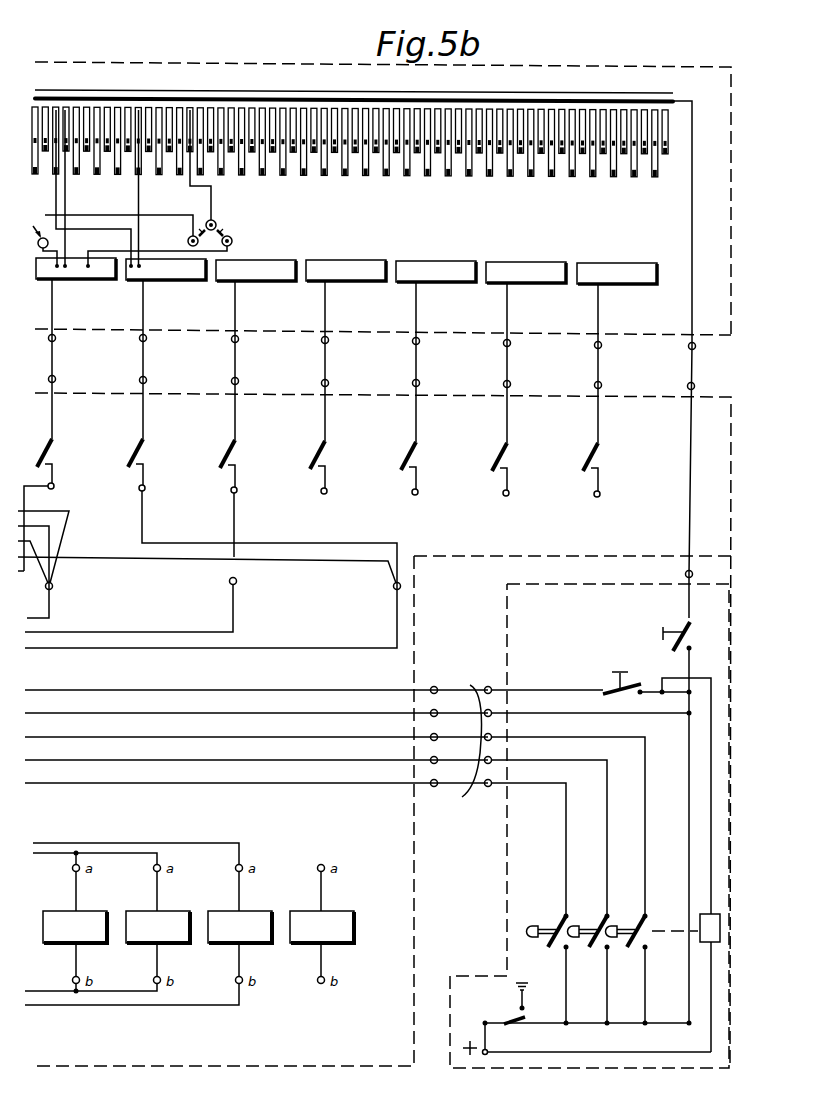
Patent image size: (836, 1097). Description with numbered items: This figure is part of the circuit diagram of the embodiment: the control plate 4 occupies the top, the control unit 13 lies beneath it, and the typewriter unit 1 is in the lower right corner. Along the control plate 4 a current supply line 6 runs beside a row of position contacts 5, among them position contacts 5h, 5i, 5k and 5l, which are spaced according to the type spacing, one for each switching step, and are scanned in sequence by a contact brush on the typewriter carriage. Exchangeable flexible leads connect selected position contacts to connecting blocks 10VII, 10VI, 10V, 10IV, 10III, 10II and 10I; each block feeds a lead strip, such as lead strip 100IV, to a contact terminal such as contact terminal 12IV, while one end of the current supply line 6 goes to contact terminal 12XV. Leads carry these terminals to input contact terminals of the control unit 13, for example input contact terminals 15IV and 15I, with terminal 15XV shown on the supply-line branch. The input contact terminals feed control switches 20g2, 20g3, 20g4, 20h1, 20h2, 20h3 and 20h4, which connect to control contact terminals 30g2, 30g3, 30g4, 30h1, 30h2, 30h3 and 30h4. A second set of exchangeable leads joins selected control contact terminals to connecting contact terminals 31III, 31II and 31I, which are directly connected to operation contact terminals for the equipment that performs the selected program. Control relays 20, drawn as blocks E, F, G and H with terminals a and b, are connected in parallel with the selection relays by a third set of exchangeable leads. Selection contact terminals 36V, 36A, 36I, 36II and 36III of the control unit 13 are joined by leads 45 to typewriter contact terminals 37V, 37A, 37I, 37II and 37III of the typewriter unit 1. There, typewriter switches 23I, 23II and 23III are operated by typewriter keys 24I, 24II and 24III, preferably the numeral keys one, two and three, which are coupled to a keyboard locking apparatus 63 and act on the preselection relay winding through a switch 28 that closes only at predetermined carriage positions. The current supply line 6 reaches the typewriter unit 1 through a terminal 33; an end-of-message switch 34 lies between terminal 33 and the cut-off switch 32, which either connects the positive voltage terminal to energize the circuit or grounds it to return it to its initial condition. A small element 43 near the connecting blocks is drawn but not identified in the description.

The typewriter unit 1 is at (730, 755).
The control plate 4 is at (735, 241).
The position contacts 5 is at (670, 125).
The position contact 5h is at (60, 107).
The position contact 5i is at (67, 110).
The position contact 5k is at (139, 107).
The contact pin 5l is at (190, 107).
The current supply line 6 is at (668, 100).
The connecting block 10VII is at (78, 272).
The connecting block 10VI is at (177, 273).
The connecting block 10V is at (267, 274).
The connecting block 10IV is at (353, 274).
The connecting block 10III is at (448, 275).
The connecting block 10II is at (538, 276).
The connecting block 10I is at (633, 277).
The lead strip 100IV is at (325, 322).
The contact terminal 12IV is at (321, 342).
The input contact terminal 15IV is at (321, 383).
The input contact terminal 15I is at (601, 386).
The contact terminal 12XV is at (696, 347).
The terminal 15XV is at (695, 388).
The control unit 13 is at (737, 500).
The control relay 20 is at (98, 914).
The control switch 20g2 is at (68, 452).
The control switch 20g3 is at (159, 452).
The control switch 20g4 is at (251, 453).
The control switch 20h1 is at (341, 454).
The control switch 20h2 is at (432, 455).
The control switch 20h3 is at (523, 456).
The control switch 20h4 is at (614, 456).
The control contact terminal 30g2 is at (55, 487).
The control contact terminal 30g3 is at (146, 489).
The control contact terminal 30g4 is at (238, 491).
The control contact terminal 30h1 is at (328, 492).
The control contact terminal 30h2 is at (419, 493).
The control contact terminal 30h3 is at (510, 494).
The control contact terminal 30h4 is at (601, 495).
The connecting contact terminal 31III is at (53, 586).
The connecting contact terminal 31II is at (237, 582).
The connecting contact terminal 31I is at (394, 588).
The terminal 33 is at (693, 574).
The end-of-message switch 34 is at (690, 633).
The switch 28 is at (636, 684).
The selection contact terminal 36V is at (434, 688).
The selection contact terminal 36A is at (435, 711).
The selection contact terminal 36I is at (435, 735).
The selection contact terminal 36II is at (435, 758).
The selection contact terminal 36III is at (435, 781).
The typewriter contact terminal 37V is at (492, 689).
The typewriter contact terminal 37A is at (492, 712).
The typewriter contact terminal 37I is at (492, 736).
The typewriter contact terminal 37II is at (492, 759).
The typewriter contact terminal 37III is at (492, 782).
The changeover contact 43 is at (230, 236).
The leads 45 is at (470, 792).
The typewriter key 24III is at (546, 927).
The typewriter key 24II is at (587, 927).
The typewriter key 24I is at (627, 927).
The typewriter switch 23III is at (563, 949).
The typewriter switch 23II is at (604, 949).
The typewriter switch 23I is at (642, 949).
The keyboard locking apparatus 63 is at (710, 928).
The cut-off switch 32 is at (519, 1029).